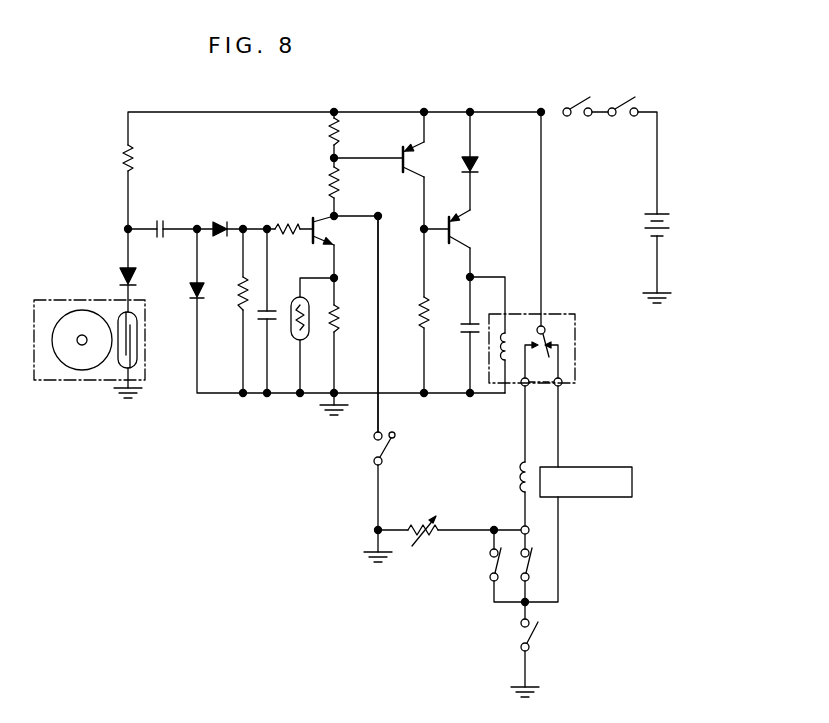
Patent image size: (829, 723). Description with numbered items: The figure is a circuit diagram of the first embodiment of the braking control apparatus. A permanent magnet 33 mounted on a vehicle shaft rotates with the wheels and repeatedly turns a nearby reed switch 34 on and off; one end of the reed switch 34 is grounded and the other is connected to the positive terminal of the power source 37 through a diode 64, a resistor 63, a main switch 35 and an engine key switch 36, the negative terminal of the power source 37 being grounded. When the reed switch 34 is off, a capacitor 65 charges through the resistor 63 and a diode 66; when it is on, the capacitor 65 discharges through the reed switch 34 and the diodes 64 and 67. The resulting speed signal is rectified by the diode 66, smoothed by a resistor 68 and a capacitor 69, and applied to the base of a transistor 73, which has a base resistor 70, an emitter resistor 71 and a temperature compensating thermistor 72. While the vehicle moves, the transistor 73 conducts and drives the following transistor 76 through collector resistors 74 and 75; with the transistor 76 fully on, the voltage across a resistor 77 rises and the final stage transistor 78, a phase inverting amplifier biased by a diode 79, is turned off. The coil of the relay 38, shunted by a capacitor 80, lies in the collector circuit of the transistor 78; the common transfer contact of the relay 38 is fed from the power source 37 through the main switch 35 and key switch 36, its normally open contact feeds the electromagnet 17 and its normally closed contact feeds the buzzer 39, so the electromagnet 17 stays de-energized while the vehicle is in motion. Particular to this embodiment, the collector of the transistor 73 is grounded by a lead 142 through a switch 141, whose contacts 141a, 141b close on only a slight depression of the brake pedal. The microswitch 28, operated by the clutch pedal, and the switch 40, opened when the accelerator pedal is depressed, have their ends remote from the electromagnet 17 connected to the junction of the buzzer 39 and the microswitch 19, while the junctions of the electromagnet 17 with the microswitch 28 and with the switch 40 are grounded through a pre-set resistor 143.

The electromagnet 17 is at (520, 480).
The microswitch 19 is at (540, 639).
The microswitch 28 is at (490, 570).
The permanent magnet 33 is at (78, 371).
The reed switch 34 is at (137, 341).
The main switch 35 is at (580, 100).
The key switch 36 is at (625, 100).
The power source 37 is at (671, 226).
The relay 38 is at (576, 347).
The buzzer 39 is at (598, 466).
The switch 40 is at (531, 565).
The resistor 63 is at (122, 164).
The diode 64 is at (119, 273).
The capacitor 65 is at (161, 221).
The diode 66 is at (222, 221).
The diode 67 is at (191, 290).
The resistor 68 is at (240, 293).
The capacitor 69 is at (262, 316).
The base resistor 70 is at (289, 224).
The emitter resistor 71 is at (337, 325).
The temperature compensating thermistor 72 is at (298, 296).
The transistor 73 is at (325, 232).
The collector resistor 74 is at (327, 130).
The collector resistor 75 is at (327, 180).
The transistor 76 is at (416, 145).
The resistor 77 is at (420, 326).
The final stage transistor 78 is at (471, 232).
The biasing diode 79 is at (476, 168).
The capacitor 80 is at (465, 328).
The switch 141 is at (390, 448).
The switch contact 141a is at (373, 437).
The switch contact 141b is at (376, 450).
The lead line 142 is at (380, 378).
The pre-set resistor 143 is at (428, 518).